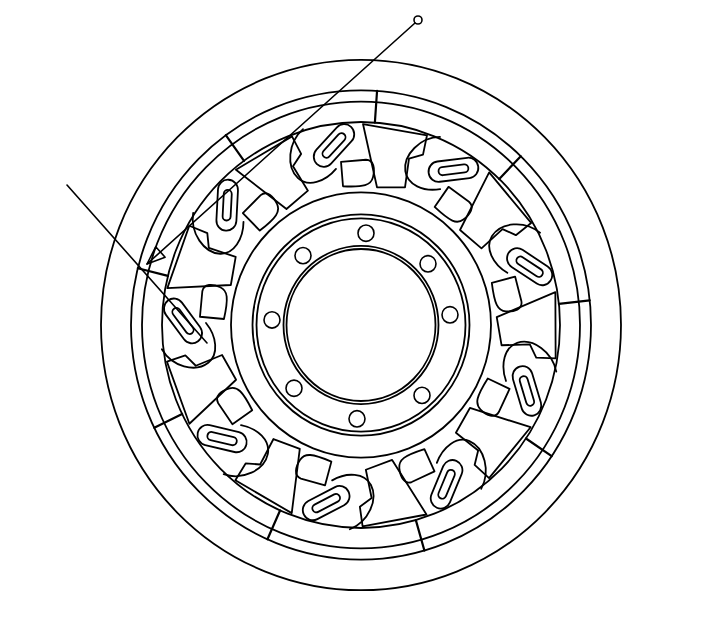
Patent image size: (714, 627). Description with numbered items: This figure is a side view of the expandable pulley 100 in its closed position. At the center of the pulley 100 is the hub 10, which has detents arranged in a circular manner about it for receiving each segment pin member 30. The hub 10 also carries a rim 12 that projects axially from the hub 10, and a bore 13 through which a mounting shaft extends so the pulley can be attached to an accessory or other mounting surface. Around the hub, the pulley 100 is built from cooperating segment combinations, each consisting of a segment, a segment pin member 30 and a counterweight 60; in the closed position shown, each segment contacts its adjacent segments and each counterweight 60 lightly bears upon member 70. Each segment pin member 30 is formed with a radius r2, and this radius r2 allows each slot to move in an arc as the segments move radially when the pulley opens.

The pulley 100 is at (220, 55).
The hub 10 is at (607, 405).
The rim 12 is at (417, 278).
The bore 13 is at (377, 372).
The segment pin member 30 is at (527, 268).
The counterweight 60 is at (488, 207).
The member 70 is at (473, 332).
The radius r2 is at (265, 174).